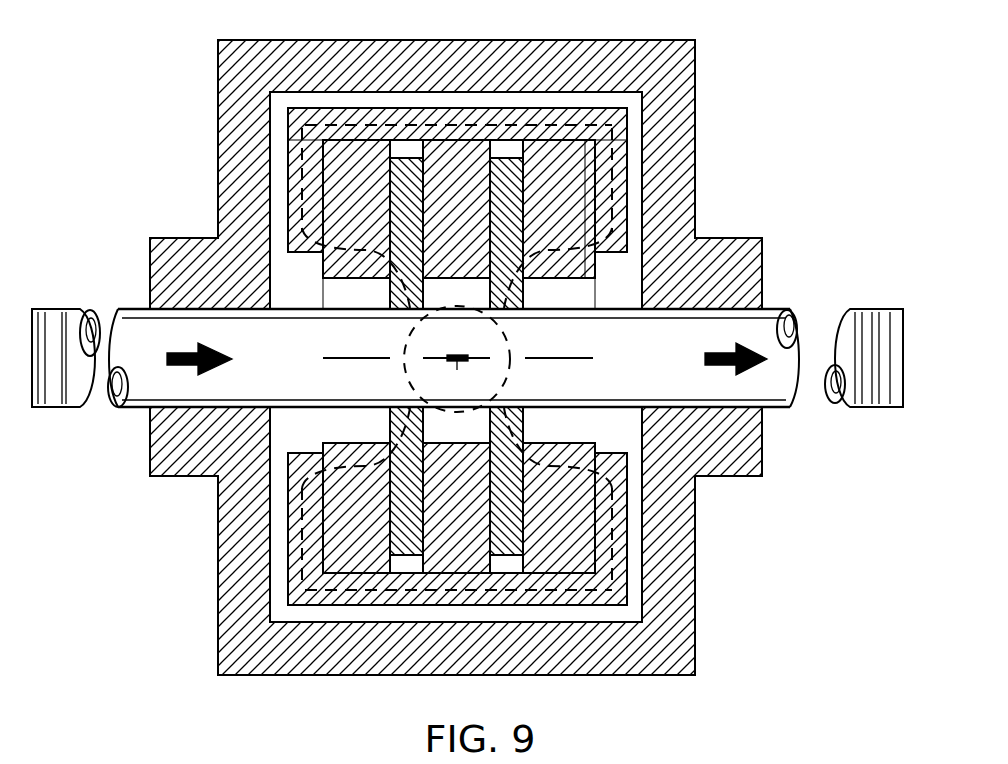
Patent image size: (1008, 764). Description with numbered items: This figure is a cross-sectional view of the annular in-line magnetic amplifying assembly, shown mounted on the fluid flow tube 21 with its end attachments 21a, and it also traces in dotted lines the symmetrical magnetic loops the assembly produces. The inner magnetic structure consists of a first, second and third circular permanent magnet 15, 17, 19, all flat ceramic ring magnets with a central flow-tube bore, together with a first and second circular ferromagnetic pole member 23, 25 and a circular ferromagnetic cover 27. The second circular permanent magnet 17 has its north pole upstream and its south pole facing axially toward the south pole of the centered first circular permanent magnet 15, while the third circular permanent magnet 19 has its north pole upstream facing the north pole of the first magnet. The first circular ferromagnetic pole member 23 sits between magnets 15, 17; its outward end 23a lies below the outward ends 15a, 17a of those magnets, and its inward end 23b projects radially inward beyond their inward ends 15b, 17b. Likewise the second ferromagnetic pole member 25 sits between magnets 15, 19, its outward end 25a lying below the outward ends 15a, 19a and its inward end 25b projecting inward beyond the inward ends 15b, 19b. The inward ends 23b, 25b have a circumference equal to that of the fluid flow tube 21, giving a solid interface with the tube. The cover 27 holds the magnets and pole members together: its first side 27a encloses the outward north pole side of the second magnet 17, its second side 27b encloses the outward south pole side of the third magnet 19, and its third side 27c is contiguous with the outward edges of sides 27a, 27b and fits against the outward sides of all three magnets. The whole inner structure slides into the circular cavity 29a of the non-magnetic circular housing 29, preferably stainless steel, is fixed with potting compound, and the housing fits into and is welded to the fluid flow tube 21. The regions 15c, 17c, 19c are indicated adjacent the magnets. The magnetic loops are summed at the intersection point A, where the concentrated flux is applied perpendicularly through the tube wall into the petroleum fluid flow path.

The non-magnetic circular housing 29 is at (678, 90).
The circular cavity 29a is at (285, 162).
The circular ferromagnetic cover 27 is at (633, 158).
The first side 27a is at (302, 188).
The second side 27b is at (617, 204).
The third side 27c is at (325, 120).
The second circular permanent magnet 17 is at (347, 142).
The first circular permanent magnet 15 is at (453, 170).
The third circular permanent magnet 19 is at (537, 155).
The outward end of second circular permanent magnet 17a is at (386, 152).
The outward end of first circular permanent magnet 15a is at (492, 152).
The outward end of third circular permanent magnet 19a is at (590, 152).
The inward end of second circular permanent magnet 17b is at (356, 340).
The inward end of first circular permanent magnet 15b is at (452, 276).
The inward end of third circular permanent magnet 19b is at (559, 340).
The gap below second magnet 15c is at (456, 293).
The gap below first magnet 17c is at (356, 293).
The gap below third magnet 19c is at (583, 288).
The intersection point A is at (457, 359).
The fluid flow tube 21 is at (125, 410).
The pipe coupling 21a is at (52, 408).
The first circular ferromagnetic pole member 23 is at (410, 548).
The outward end of first pole member 23a is at (418, 565).
The inward end of first pole member 23b is at (400, 408).
The second ferromagnetic pole member 25 is at (520, 548).
The outward end of second pole member 25a is at (512, 562).
The inward end of second pole member 25b is at (518, 408).